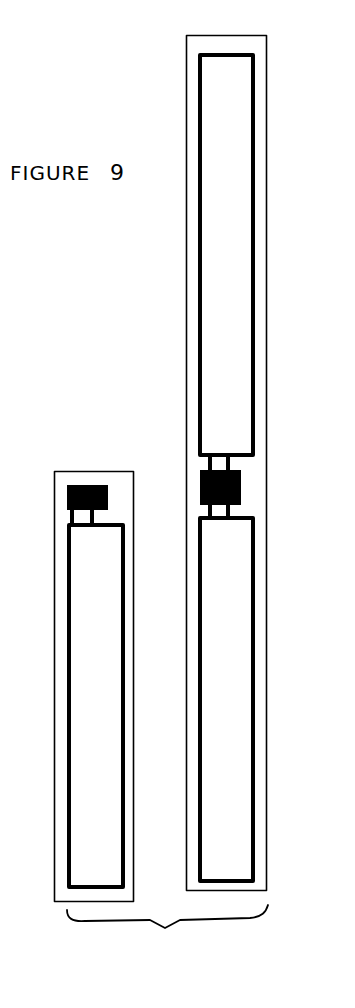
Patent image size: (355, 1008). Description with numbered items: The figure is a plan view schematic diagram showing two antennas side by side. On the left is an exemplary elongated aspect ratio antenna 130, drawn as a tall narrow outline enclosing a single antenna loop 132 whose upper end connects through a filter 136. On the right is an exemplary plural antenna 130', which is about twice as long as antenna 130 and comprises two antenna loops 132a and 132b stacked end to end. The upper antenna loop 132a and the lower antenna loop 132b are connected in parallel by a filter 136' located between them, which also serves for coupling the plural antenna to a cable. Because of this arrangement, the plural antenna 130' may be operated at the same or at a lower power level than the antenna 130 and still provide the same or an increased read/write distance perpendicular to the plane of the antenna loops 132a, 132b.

The elongated aspect ratio antenna 130 is at (73, 687).
The plural antenna 130' is at (197, 463).
The antenna loop 132 is at (68, 684).
The antenna loop 132a is at (199, 248).
The antenna loop 132b is at (255, 580).
The filter 136 is at (92, 482).
The filter 136' is at (265, 486).